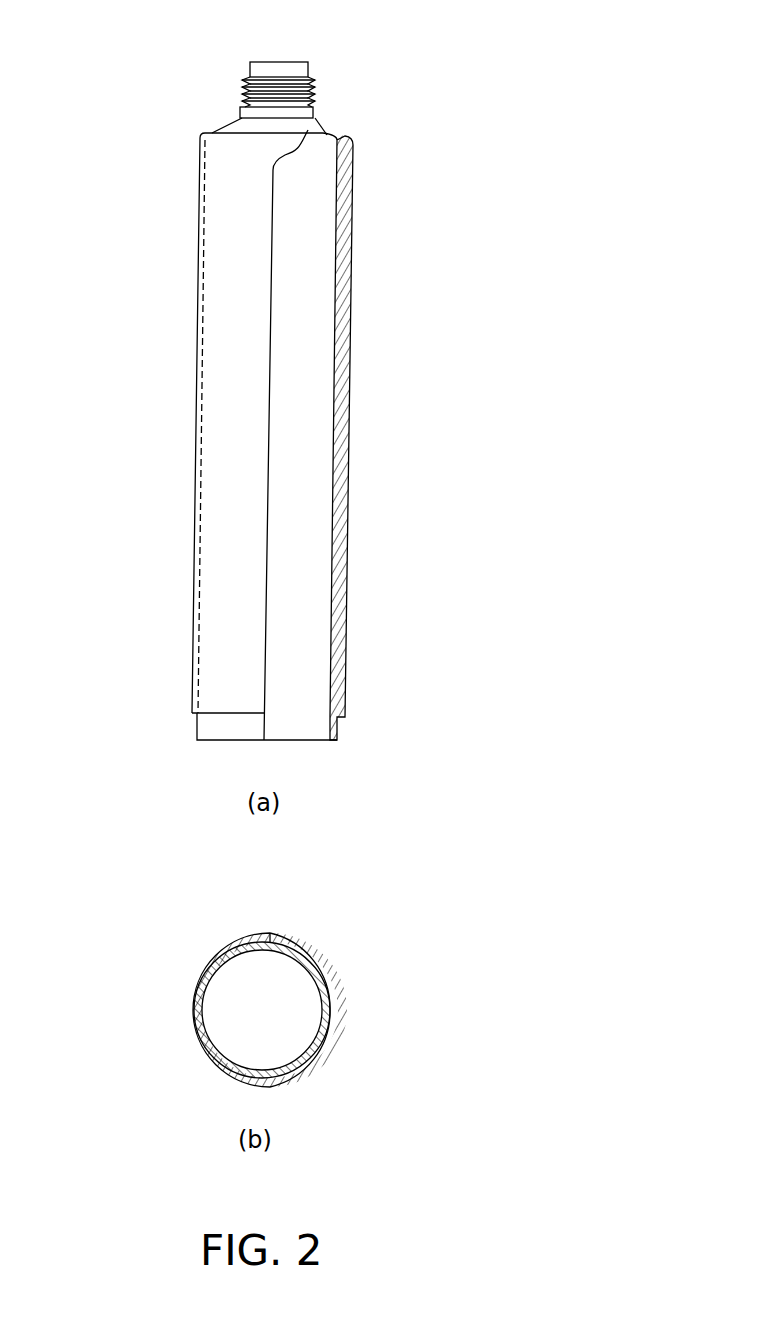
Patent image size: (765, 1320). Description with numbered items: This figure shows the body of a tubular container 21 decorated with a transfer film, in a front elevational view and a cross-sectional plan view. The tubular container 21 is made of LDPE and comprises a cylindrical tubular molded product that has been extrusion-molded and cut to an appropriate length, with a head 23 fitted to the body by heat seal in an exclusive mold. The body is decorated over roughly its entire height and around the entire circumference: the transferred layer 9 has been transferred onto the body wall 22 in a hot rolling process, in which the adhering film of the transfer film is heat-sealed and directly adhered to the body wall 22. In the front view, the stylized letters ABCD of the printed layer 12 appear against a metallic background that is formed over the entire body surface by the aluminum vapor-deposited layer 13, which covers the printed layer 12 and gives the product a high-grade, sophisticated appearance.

The transferred layer 9 is at (217, 280).
The printed layer 12 is at (228, 305).
The aluminum vapor-deposited layer 13 is at (232, 553).
The tubular container 21 is at (372, 139).
The body wall 22 is at (343, 323).
The head 23 is at (240, 118).